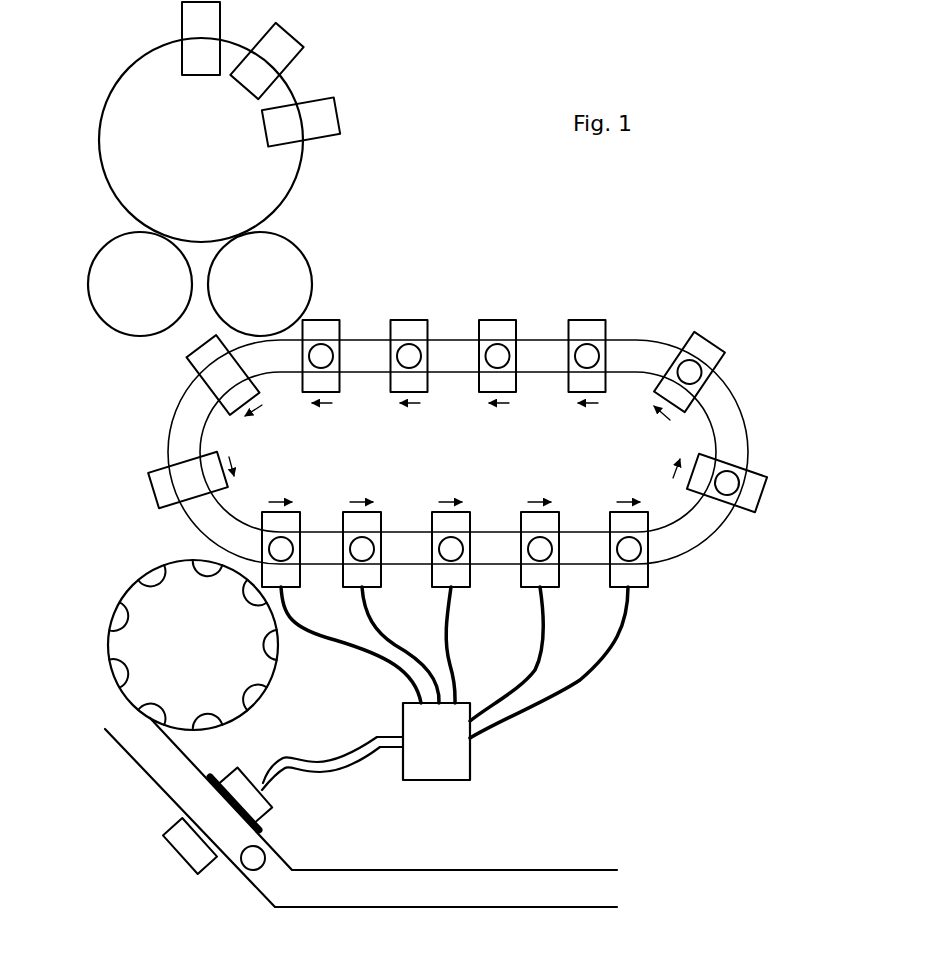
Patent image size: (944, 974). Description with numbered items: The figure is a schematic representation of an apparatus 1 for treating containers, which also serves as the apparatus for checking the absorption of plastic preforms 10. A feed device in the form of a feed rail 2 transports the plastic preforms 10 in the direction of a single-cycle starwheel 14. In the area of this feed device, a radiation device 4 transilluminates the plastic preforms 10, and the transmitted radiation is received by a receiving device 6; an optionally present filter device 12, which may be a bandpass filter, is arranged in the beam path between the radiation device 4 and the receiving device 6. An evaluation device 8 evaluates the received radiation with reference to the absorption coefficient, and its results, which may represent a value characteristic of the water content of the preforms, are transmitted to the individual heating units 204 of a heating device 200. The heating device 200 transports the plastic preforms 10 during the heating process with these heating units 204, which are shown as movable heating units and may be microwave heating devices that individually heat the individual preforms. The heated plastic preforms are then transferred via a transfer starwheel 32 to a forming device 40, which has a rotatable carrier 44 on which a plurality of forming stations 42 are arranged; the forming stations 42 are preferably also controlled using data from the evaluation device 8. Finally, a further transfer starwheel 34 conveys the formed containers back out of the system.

The apparatus 1 is at (116, 867).
The feed rail 2 is at (167, 782).
The radiation device 4 is at (216, 874).
The receiving device 6 is at (257, 813).
The evaluation device 8 is at (470, 773).
The plastic preforms 10 is at (265, 541).
The filter device 12 is at (212, 779).
The single-cycle starwheel 14 is at (128, 593).
The transfer starwheel 32 is at (297, 245).
The further transfer starwheel 34 is at (95, 316).
The forming device 40 is at (101, 187).
The forming stations 42 is at (222, 13).
The rotatable carrier 44 is at (258, 187).
The heating device 200 is at (713, 272).
The heating units 204 is at (298, 588).